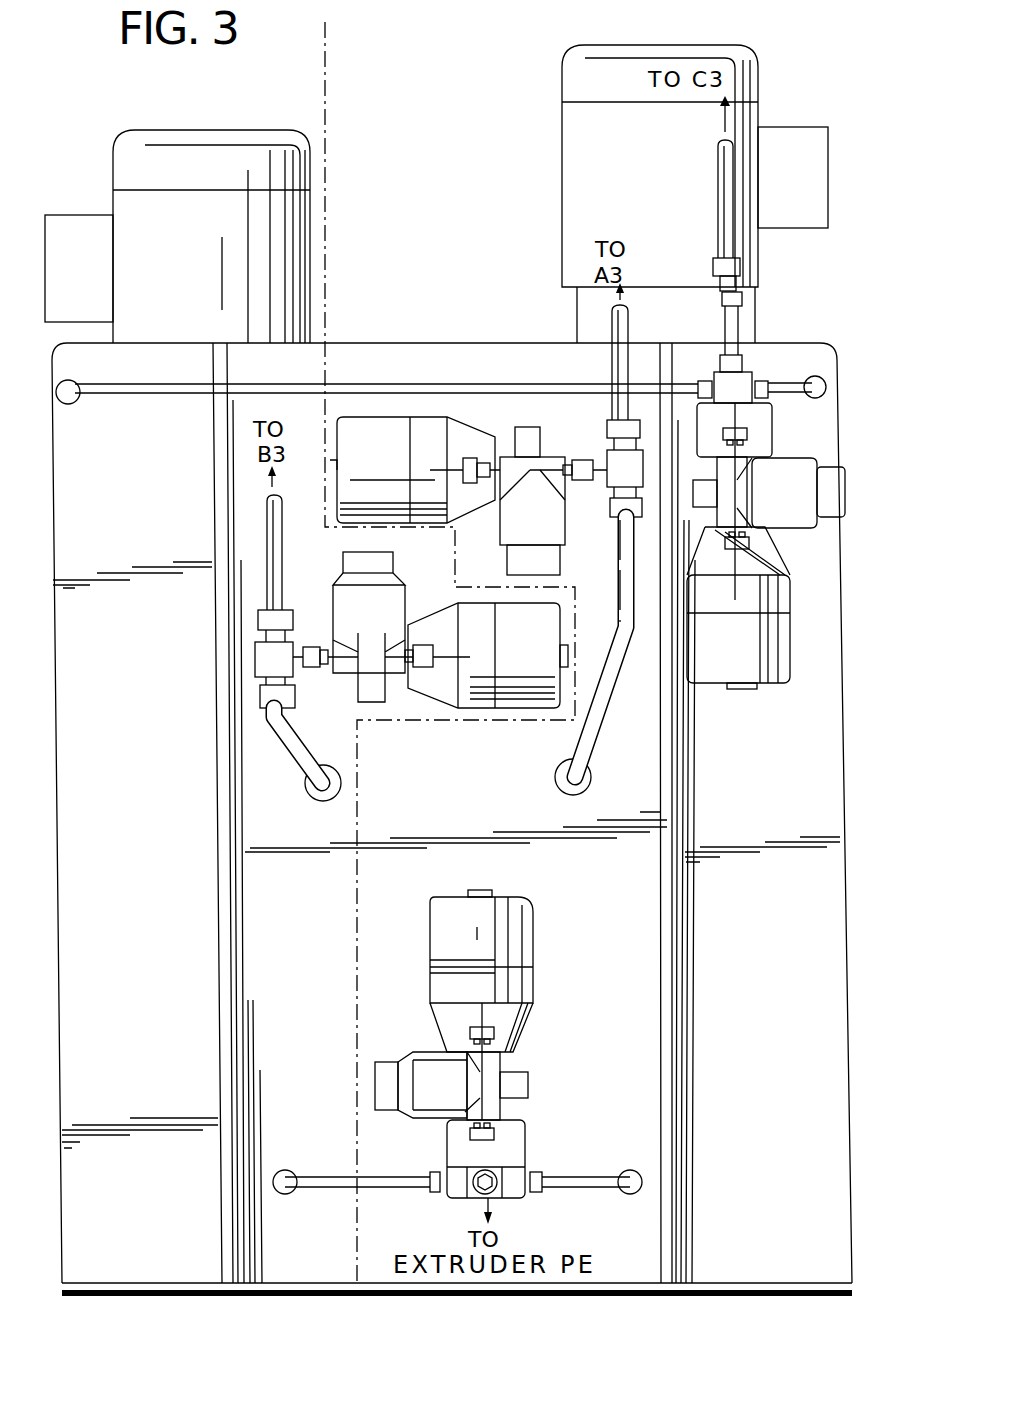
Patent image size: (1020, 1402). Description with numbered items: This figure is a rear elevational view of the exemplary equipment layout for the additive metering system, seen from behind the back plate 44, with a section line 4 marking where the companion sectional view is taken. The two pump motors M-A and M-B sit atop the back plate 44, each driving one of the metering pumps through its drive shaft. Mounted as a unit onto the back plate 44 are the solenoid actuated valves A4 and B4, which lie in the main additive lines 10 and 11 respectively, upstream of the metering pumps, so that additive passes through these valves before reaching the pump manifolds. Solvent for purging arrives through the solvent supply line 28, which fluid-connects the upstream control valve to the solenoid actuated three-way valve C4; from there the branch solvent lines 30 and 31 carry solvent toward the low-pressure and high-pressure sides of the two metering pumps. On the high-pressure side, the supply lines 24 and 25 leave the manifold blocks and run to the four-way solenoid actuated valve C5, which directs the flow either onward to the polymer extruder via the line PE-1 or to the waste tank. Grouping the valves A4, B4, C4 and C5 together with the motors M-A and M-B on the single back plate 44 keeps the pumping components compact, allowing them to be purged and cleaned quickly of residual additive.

The section line 4- 4 is at (325, 22).
The main additive line 10 is at (605, 698).
The main additive line 11 is at (270, 540).
The supply line 24 is at (576, 1185).
The supply line 25 is at (337, 1185).
The solvent supply line 28 is at (728, 208).
The branch solvent line 30 is at (800, 392).
The branch solvent line 31 is at (393, 387).
The back plate 44 is at (148, 778).
The solenoid actuated valve A4 is at (388, 467).
The solenoid actuated valve B4 is at (538, 643).
The solenoid actuated three-way valve C4 is at (740, 655).
The four-way solenoid actuated valve C5 is at (468, 943).
The line PE-1 is at (490, 1198).
The pump motor M-A is at (680, 171).
The pump motor M-B is at (218, 280).